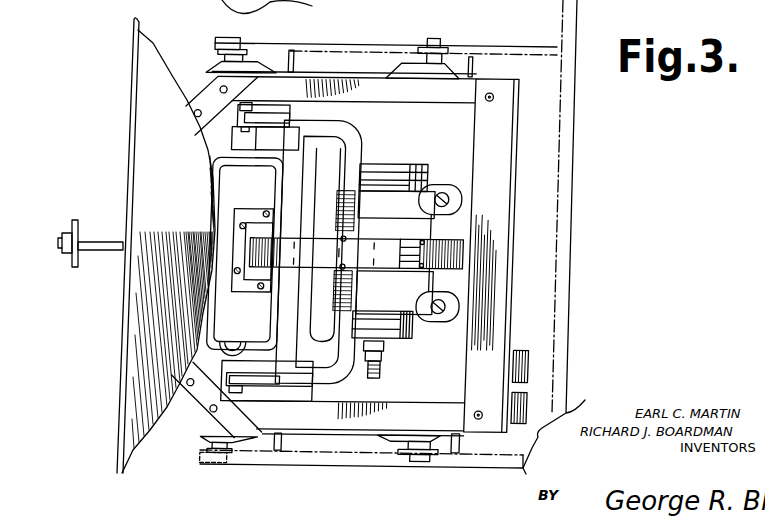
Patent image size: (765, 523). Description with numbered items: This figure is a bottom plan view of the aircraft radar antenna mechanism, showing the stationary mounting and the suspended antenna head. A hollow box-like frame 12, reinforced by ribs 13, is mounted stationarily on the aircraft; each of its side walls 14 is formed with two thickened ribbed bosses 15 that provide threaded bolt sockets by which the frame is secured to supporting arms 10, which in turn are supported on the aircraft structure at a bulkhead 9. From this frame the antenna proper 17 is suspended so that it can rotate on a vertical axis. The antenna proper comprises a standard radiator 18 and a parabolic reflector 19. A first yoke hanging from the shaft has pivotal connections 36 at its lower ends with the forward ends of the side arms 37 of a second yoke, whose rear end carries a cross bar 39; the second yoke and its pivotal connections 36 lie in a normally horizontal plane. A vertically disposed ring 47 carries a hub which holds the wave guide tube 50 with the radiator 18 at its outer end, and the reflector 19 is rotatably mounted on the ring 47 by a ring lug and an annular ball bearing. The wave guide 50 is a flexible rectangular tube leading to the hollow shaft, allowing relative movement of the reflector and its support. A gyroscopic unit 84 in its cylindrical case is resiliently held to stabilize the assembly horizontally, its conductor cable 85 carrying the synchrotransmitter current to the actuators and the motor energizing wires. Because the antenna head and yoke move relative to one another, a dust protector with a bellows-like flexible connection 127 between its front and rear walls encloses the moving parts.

The bulkhead 9 is at (578, 103).
The supporting arms 10 is at (477, 472).
The hollow box-like frame 12 is at (543, 173).
The ribs 13 is at (297, 63).
The side walls 14 is at (367, 75).
The thickened ribbed bosses 15 is at (250, 63).
The antenna proper 17 is at (305, 244).
The radiator 18 is at (101, 252).
The parabolic reflector 19 is at (134, 95).
The pivotal connections 36 is at (247, 110).
The side arms 37 is at (322, 140).
The cross bar 39 is at (358, 157).
The ring 47 is at (212, 292).
The wave guide tube 50 is at (458, 255).
The gyroscopic unit 84 is at (412, 162).
The conductor cable 85 is at (385, 372).
The bellows-like flexible connection 127 is at (295, 182).